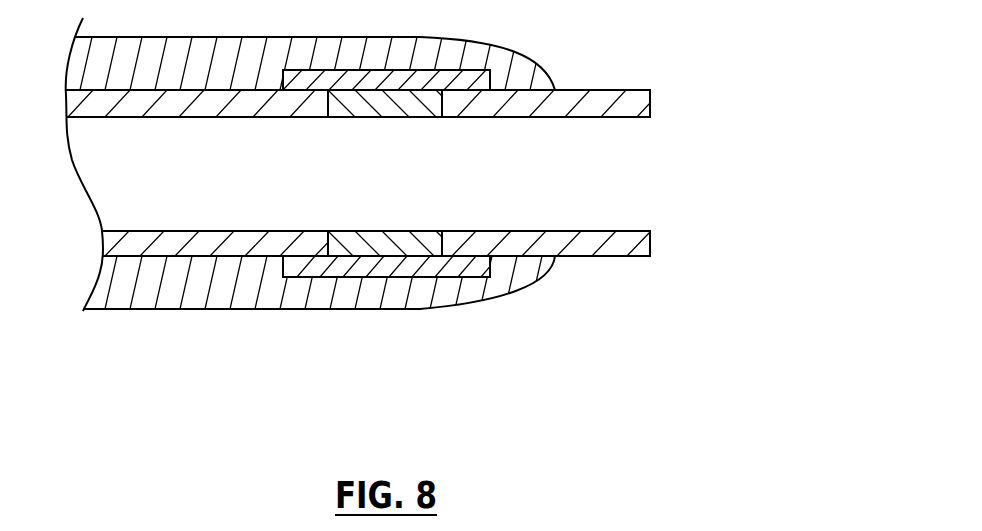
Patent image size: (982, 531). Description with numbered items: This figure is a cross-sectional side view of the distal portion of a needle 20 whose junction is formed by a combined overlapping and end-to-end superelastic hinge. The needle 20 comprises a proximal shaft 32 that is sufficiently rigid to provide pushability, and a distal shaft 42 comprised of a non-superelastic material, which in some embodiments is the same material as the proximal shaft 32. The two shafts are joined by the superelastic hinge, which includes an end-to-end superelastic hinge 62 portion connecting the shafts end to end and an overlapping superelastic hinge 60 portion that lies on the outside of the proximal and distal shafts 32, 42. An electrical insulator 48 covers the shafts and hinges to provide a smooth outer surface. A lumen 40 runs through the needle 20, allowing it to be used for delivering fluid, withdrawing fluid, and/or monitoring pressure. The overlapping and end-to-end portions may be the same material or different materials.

The needle 20 is at (420, 241).
The proximal shaft 32 is at (203, 247).
The lumen 40 is at (420, 249).
The distal shaft 42 is at (585, 242).
The electrical insulator 48 is at (313, 290).
The overlapping superelastic hinge portion 60 is at (405, 267).
The end-to-end superelastic hinge portion 62 is at (382, 247).